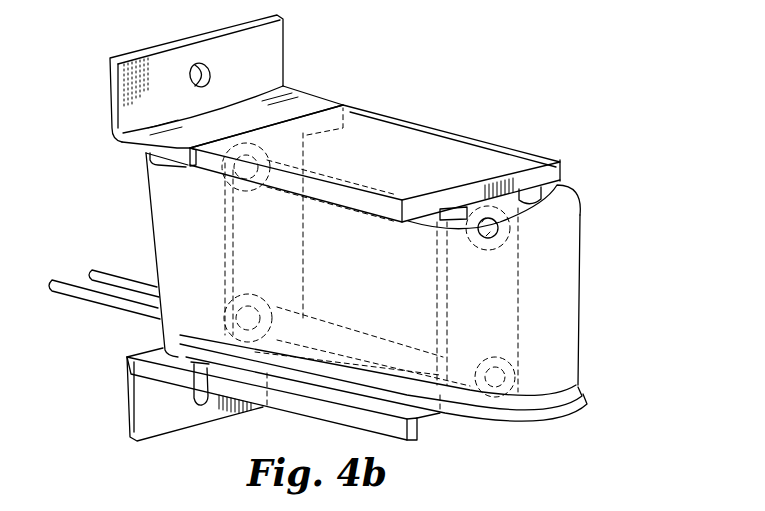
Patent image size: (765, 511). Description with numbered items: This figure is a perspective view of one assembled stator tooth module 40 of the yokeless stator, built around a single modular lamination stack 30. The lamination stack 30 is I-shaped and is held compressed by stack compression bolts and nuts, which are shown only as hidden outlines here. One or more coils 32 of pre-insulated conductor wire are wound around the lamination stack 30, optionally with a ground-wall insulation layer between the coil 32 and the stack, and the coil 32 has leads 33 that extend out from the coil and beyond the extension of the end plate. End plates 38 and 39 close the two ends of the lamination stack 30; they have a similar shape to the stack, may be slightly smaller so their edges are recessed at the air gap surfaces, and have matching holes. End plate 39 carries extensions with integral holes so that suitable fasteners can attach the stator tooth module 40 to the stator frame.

The modular lamination stack 30 is at (417, 157).
The coil 32 is at (550, 307).
The leads 33 is at (78, 292).
The end plate 38 is at (562, 176).
The end plate 39 is at (297, 113).
The stator tooth module 40 is at (342, 228).